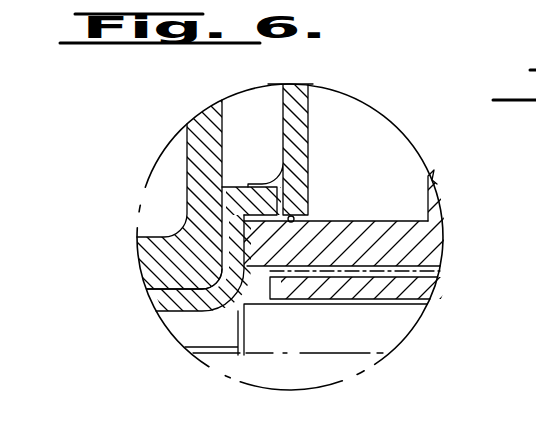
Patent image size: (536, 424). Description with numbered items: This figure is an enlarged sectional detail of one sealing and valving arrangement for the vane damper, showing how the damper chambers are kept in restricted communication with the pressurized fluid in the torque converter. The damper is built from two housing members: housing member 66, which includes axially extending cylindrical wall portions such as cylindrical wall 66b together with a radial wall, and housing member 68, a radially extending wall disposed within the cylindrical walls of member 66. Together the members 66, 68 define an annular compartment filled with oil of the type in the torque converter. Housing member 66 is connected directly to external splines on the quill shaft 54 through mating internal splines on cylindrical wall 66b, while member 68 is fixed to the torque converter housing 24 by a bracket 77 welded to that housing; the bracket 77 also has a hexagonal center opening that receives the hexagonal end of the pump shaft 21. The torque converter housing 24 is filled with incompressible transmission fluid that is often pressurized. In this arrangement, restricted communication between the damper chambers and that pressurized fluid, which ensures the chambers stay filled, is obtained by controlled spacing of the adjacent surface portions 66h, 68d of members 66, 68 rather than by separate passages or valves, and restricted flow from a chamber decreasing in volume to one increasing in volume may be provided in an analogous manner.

The pump shaft 21 is at (383, 334).
The torque converter housing 24 is at (180, 180).
The quill shaft 54 is at (425, 288).
The housing member 66 is at (454, 237).
The cylindrical wall portion 66b is at (385, 221).
The surface portion 66h is at (291, 222).
The housing member 68 is at (311, 103).
The surface portion 68d is at (307, 217).
The bracket 77 is at (148, 297).